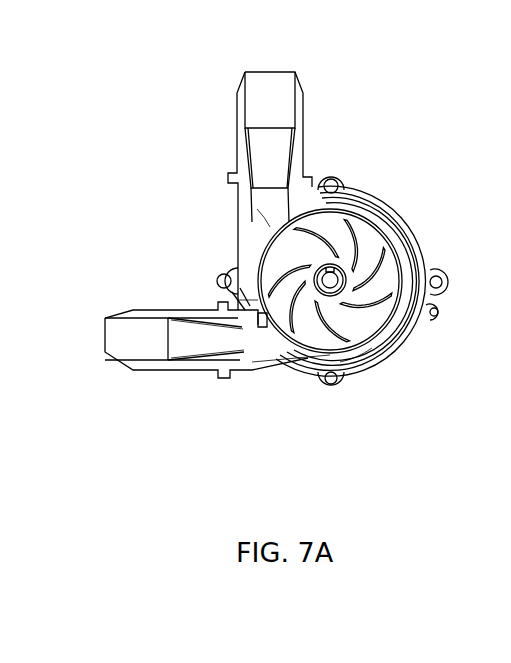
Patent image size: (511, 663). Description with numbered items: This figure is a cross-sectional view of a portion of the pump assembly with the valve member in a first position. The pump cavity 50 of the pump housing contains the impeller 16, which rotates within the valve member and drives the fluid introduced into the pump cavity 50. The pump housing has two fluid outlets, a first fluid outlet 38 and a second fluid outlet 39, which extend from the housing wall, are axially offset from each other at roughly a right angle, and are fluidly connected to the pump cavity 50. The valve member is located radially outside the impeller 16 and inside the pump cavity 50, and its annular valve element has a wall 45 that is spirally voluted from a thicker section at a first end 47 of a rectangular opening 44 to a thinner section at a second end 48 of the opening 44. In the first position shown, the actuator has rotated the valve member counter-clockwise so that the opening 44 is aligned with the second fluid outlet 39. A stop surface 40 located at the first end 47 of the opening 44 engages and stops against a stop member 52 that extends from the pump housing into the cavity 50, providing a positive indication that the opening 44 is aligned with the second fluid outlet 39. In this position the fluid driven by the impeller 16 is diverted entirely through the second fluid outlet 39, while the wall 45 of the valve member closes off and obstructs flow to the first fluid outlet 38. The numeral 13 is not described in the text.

The first fluid outlet 38 is at (250, 71).
The second fluid outlet 39 is at (103, 362).
The stop surface 40 is at (255, 308).
The wall 45 is at (273, 232).
The first end 47 is at (257, 298).
The pump cavity 50 is at (372, 240).
The impeller 16 is at (385, 297).
The pump housing 13 is at (383, 333).
The second end 48 is at (373, 353).
The opening 44 is at (308, 357).
The stop member 52 is at (258, 327).